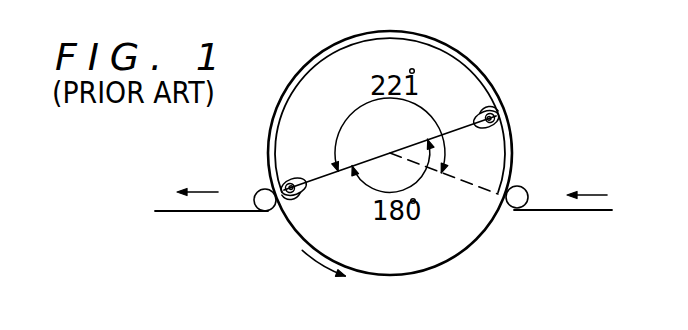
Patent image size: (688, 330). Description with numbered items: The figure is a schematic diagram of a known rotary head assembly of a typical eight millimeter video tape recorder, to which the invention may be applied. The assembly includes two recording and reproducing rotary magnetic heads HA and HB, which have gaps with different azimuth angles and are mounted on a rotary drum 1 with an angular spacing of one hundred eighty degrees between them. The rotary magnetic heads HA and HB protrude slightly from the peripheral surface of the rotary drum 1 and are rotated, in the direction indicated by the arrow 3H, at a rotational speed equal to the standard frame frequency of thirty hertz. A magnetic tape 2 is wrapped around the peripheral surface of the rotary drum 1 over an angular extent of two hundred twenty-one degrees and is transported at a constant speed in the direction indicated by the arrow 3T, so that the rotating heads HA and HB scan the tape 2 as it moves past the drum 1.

The rotary drum 1 is at (475, 238).
The magnetic tape 2 is at (588, 211).
The arrow indicating tape transport direction 3T is at (207, 192).
The arrow indicating head rotation direction 3H is at (328, 269).
The rotary magnetic head HA is at (491, 107).
The rotary magnetic head HB is at (289, 197).